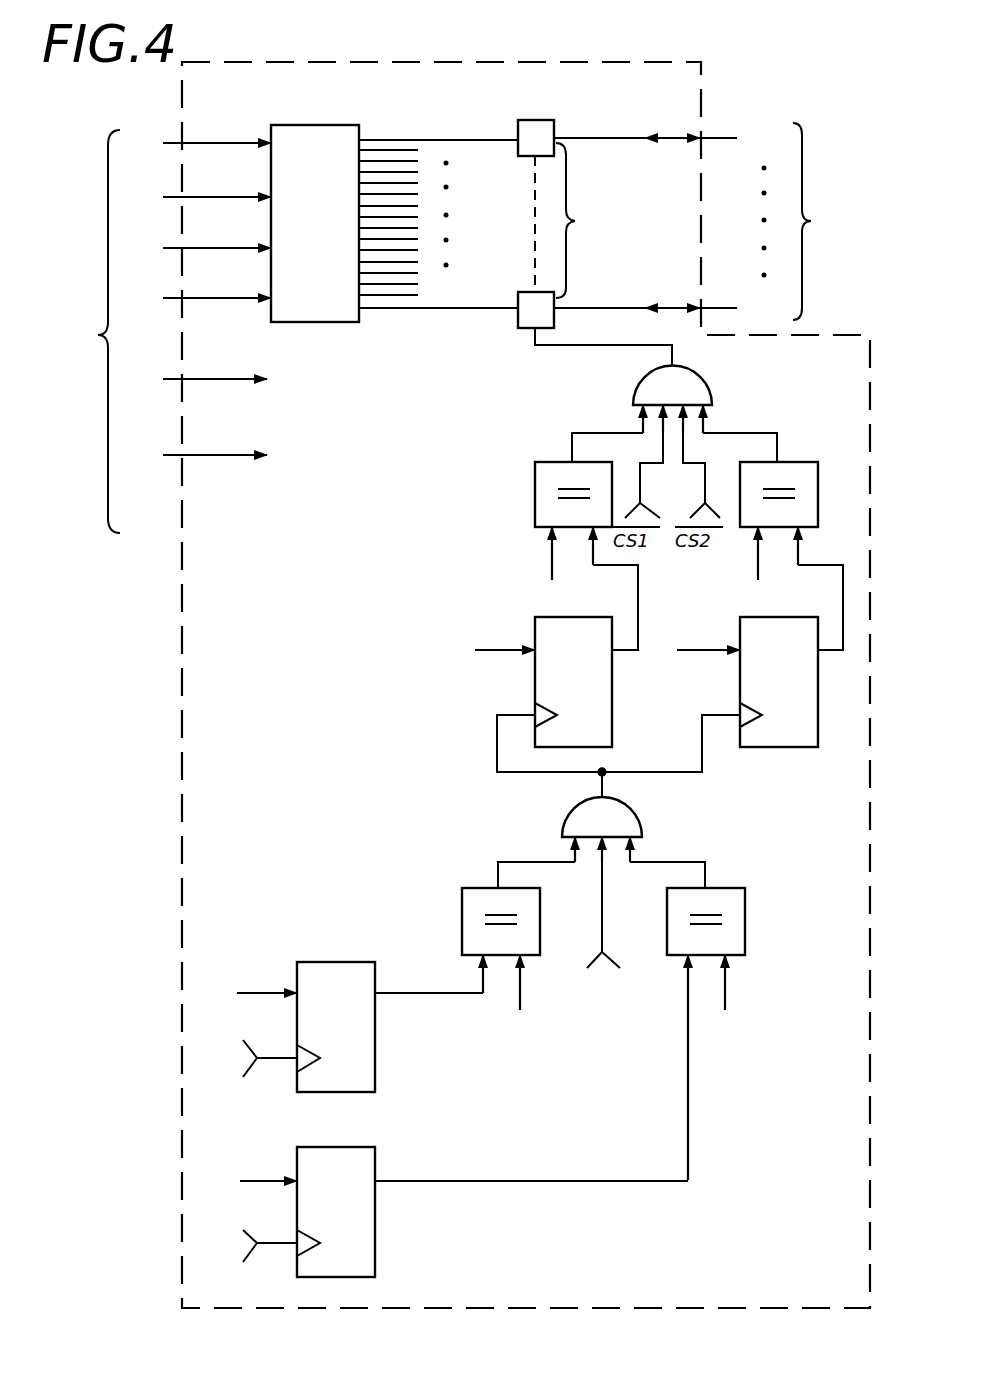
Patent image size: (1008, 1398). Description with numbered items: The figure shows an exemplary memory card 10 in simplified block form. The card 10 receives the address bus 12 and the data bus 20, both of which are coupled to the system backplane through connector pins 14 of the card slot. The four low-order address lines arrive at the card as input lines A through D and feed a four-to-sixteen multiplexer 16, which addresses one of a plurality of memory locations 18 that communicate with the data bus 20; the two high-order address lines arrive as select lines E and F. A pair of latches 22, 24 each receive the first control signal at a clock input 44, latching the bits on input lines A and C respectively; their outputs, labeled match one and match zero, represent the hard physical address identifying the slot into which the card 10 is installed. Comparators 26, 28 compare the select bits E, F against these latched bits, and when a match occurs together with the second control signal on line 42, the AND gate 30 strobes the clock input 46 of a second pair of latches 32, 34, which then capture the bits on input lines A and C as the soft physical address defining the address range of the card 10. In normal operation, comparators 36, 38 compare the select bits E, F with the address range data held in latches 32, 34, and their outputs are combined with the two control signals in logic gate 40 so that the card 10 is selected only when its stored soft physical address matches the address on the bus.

The memory card 10 is at (528, 62).
The address bus 12 is at (161, 325).
The connector pins 14 is at (701, 138).
The 4:16 multiplexer 16 is at (311, 125).
The memory locations 18 is at (568, 224).
The data bus 20 is at (800, 222).
The latch 22 is at (340, 960).
The latch 24 is at (347, 1147).
The comparator 26 is at (470, 888).
The comparator 28 is at (745, 893).
The logic circuit (AND gate) 30 is at (640, 820).
The latch 32 is at (783, 748).
The latch 34 is at (535, 685).
The comparator 36 is at (533, 473).
The comparator 38 is at (795, 462).
The logic gate 40 is at (710, 392).
The control signal CS2 line 42 is at (602, 943).
The clock input 44 is at (277, 1060).
The clock input 46 is at (665, 772).